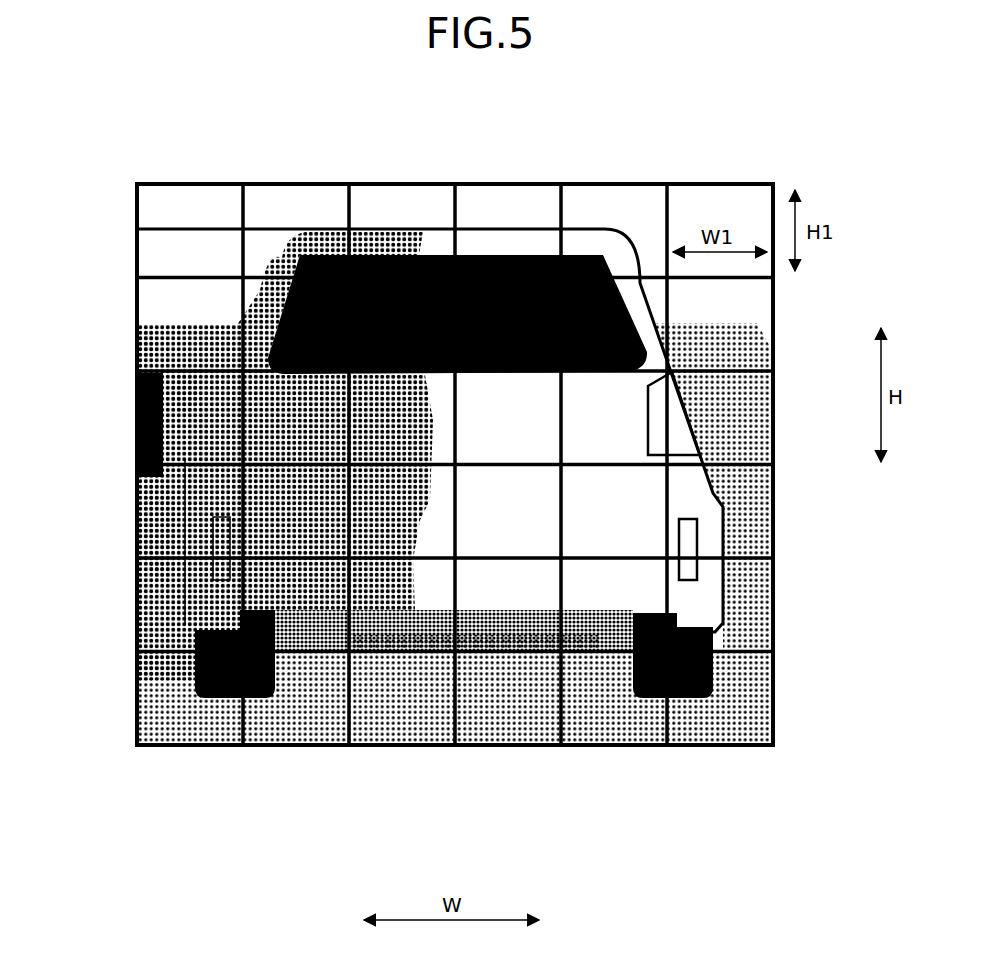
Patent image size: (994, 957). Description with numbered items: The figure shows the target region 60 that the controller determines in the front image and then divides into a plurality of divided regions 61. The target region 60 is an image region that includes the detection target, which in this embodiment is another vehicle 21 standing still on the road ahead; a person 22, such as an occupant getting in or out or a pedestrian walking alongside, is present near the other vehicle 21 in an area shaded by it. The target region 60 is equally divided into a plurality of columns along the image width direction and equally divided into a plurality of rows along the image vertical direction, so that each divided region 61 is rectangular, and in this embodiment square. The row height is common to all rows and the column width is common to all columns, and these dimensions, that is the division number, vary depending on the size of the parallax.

The target region 60 is at (729, 166).
The divided region 61 is at (222, 493).
The other vehicle 21 is at (180, 603).
The person 22 is at (133, 492).